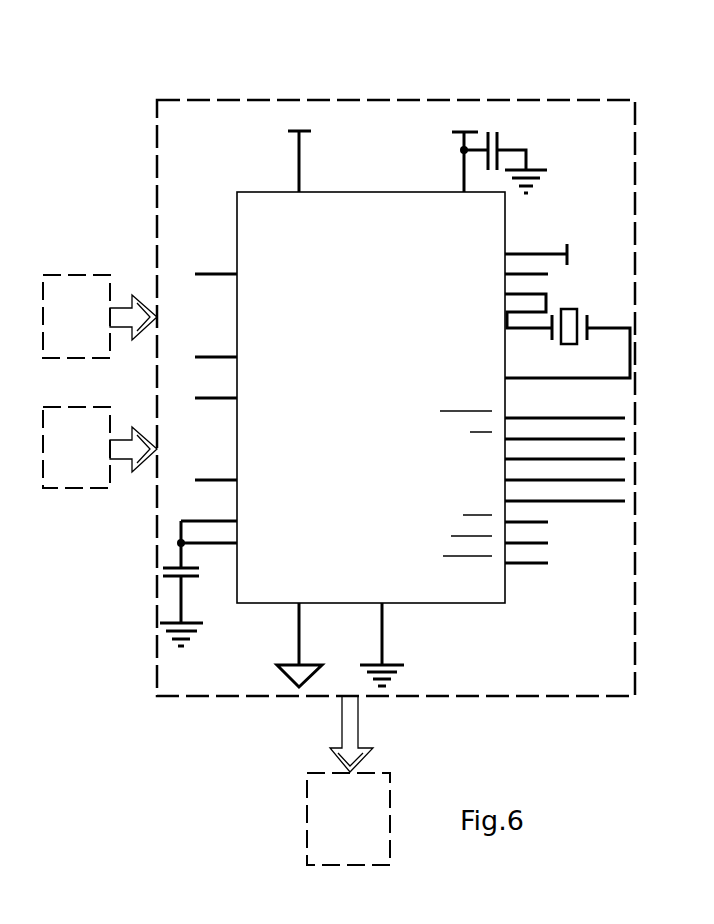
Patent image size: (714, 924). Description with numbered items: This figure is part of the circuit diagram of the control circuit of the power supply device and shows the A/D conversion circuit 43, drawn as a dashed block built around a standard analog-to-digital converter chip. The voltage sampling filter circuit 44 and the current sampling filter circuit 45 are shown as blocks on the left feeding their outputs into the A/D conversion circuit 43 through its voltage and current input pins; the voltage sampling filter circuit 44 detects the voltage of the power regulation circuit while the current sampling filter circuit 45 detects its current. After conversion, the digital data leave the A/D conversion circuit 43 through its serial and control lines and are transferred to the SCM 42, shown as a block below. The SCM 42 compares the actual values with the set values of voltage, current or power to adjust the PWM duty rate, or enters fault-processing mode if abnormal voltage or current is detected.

The SCM 42 is at (348, 780).
The A/D conversion circuit 43 is at (396, 355).
The voltage sampling filter circuit 44 is at (100, 316).
The current sampling filter circuit 45 is at (100, 447).